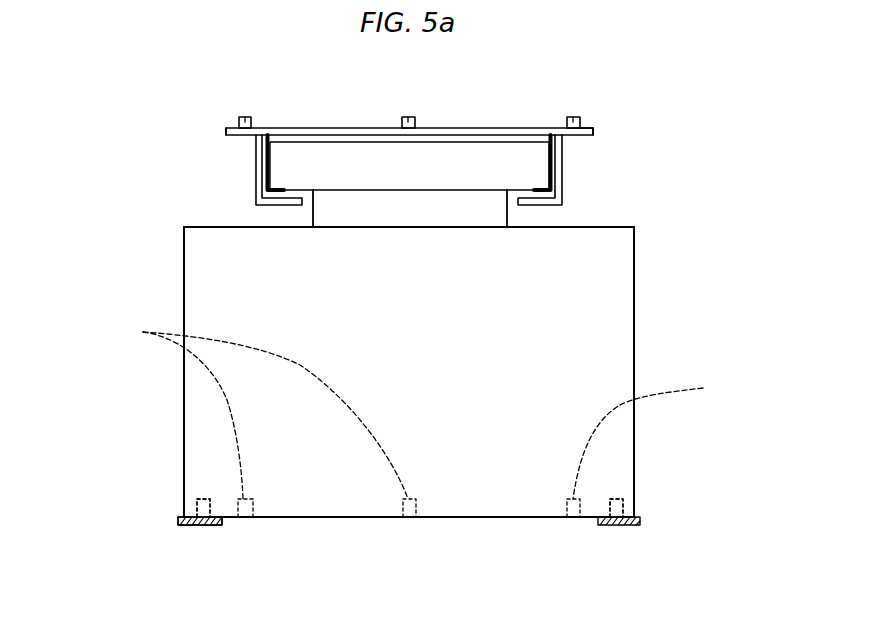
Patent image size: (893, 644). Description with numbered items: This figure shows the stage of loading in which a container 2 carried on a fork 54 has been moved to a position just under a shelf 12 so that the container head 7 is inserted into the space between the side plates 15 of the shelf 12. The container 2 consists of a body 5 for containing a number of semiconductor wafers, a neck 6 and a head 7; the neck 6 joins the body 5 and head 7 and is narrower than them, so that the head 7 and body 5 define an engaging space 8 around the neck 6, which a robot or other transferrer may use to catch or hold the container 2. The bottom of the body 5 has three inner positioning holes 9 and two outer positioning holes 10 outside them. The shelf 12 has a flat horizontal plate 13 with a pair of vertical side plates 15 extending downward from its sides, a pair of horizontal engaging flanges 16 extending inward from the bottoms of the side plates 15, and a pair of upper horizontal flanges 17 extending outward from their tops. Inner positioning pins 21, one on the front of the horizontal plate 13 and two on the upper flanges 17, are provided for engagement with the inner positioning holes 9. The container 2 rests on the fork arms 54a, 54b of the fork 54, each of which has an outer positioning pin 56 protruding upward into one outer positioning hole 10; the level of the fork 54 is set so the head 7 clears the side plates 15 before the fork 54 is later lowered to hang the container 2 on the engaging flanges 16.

The container 2 is at (634, 273).
The body 5 is at (588, 328).
The neck 6 is at (393, 213).
The head 7 is at (470, 155).
The engaging space 8 is at (293, 216).
The inner positioning holes 9 is at (421, 406).
The outer positioning holes 10 is at (203, 499).
The shelf 12 is at (592, 126).
The horizontal plate 13 is at (343, 128).
The side plates 15 is at (256, 177).
The engaging flanges 16 is at (281, 195).
The upper flanges 17 is at (227, 133).
The inner positioning pins 21 is at (244, 117).
The fork 54 is at (179, 517).
The fork arm 54a is at (640, 521).
The fork arm 54b is at (200, 525).
The outer positioning pins 56 is at (449, 464).